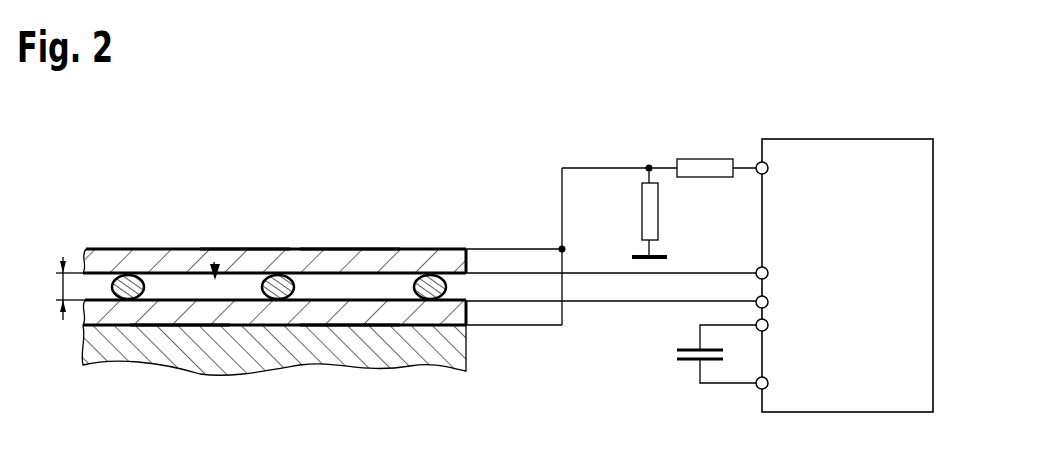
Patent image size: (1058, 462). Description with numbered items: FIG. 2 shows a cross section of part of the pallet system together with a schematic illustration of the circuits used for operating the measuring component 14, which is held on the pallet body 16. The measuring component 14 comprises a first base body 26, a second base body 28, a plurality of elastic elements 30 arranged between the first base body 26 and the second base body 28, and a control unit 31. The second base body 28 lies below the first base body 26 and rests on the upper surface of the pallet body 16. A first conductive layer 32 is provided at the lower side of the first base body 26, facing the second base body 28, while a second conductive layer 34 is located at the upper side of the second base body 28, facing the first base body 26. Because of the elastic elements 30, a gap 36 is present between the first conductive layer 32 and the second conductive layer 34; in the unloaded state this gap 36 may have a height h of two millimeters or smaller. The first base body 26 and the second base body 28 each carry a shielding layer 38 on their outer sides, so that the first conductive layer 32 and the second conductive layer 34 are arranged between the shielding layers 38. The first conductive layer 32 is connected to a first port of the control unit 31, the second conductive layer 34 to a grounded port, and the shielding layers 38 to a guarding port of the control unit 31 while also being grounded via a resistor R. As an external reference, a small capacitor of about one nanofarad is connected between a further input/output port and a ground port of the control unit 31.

The measuring component 14 is at (206, 125).
The pallet body 16 is at (378, 350).
The first base body 26 is at (155, 258).
The second base body 28 is at (242, 315).
The elastic elements 30 is at (117, 270).
The control unit 31 is at (838, 139).
The first conductive layer 32 is at (245, 252).
The second conductive layer 34 is at (175, 320).
The gap 36 is at (213, 262).
The shielding layer 38 is at (347, 248).
The height h is at (61, 300).
The resistor R is at (641, 212).